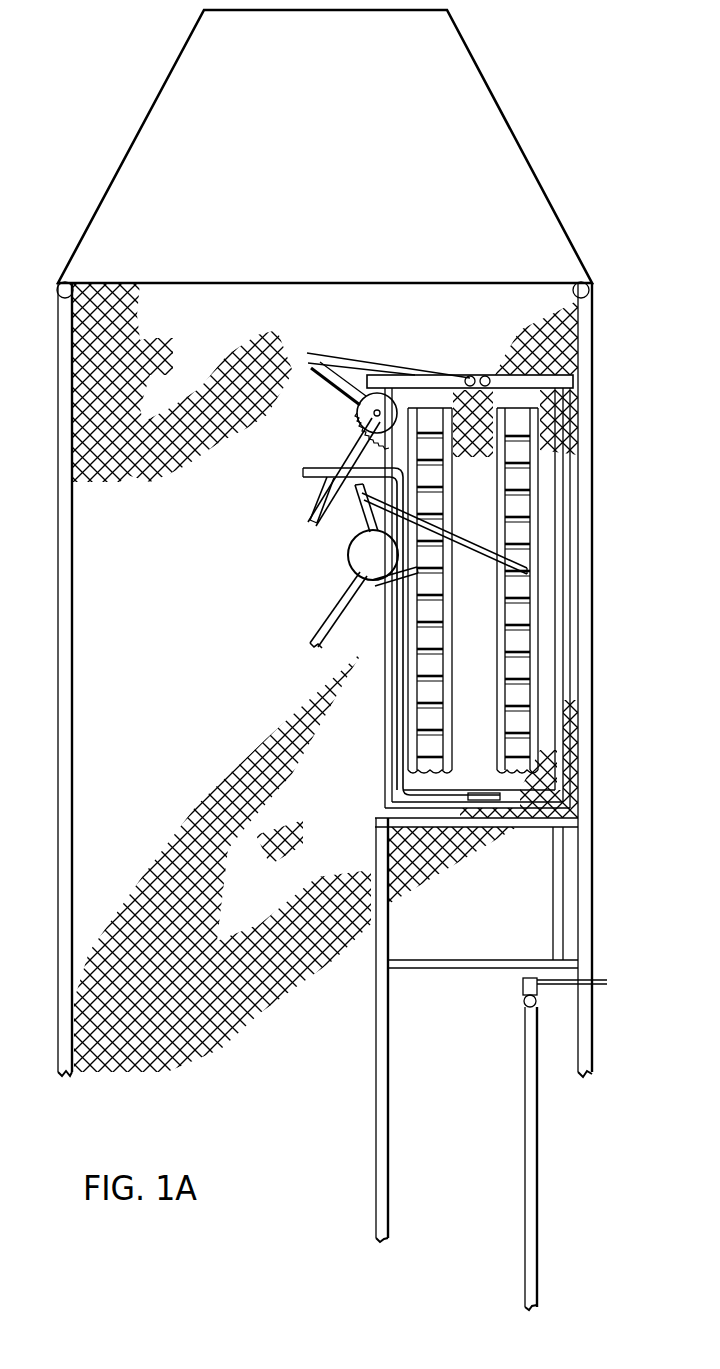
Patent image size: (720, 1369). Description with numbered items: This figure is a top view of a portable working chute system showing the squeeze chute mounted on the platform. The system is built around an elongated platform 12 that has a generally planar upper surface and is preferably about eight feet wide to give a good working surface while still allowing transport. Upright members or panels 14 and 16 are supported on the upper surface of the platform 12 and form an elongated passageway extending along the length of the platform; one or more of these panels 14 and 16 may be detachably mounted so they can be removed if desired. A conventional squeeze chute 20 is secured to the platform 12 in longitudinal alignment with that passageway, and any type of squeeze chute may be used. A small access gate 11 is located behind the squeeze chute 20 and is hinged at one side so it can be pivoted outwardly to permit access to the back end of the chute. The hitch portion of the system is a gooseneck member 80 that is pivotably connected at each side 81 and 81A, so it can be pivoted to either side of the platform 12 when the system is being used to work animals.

The gooseneck member 80 is at (526, 174).
The side 81 is at (57, 277).
The side 81A is at (577, 277).
The elongated platform 12 is at (100, 450).
The squeeze chute 20 is at (548, 448).
The access gate 11 is at (558, 883).
The upright panel 14 is at (376, 1173).
The upright panel 16 is at (538, 1207).